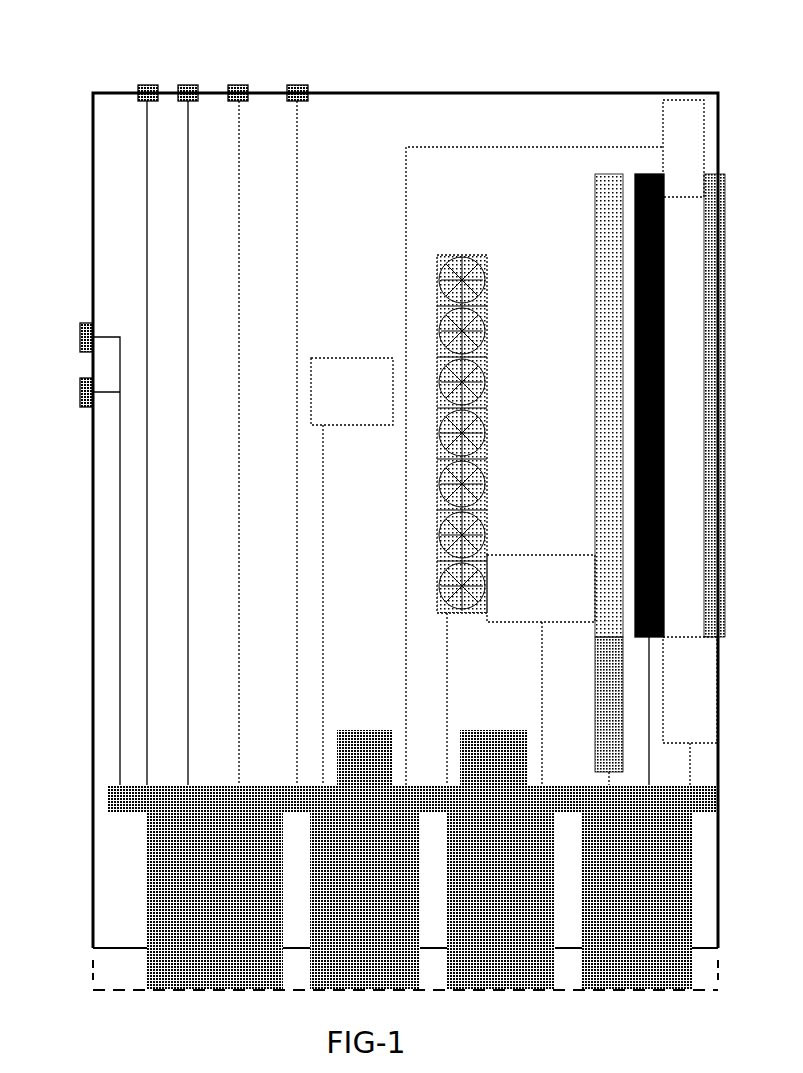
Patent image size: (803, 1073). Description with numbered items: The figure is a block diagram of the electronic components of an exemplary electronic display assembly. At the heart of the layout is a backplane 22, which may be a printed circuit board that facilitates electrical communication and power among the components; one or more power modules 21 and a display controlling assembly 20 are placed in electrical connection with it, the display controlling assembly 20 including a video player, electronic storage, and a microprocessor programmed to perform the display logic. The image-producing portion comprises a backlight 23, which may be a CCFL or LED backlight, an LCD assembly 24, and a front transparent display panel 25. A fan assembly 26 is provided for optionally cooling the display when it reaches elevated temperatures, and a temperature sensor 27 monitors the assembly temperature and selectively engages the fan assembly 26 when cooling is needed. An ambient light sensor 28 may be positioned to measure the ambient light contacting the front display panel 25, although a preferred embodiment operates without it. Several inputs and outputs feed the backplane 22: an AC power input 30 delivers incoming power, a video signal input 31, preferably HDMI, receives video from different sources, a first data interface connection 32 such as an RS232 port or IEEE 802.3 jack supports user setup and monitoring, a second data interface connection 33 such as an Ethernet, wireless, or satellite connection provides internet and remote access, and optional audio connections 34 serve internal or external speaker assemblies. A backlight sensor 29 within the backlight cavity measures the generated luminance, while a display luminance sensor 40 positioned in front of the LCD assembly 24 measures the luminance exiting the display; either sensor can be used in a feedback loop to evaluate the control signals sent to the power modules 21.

The display controlling assembly 20 is at (206, 960).
The power modules 21 is at (608, 966).
The backplane 22 is at (237, 798).
The backlight 23 is at (600, 172).
The LCD assembly 24 is at (647, 172).
The front transparent display panel 25 is at (723, 175).
The fan assembly 26 is at (443, 254).
The temperature sensor 27 is at (353, 356).
The ambient light sensor 28 is at (705, 692).
The backlight sensor 29 is at (558, 622).
The AC power input 30 is at (300, 84).
The video signal input 31 is at (139, 85).
The first data interface connection 32 is at (188, 84).
The second data interface connection 33 is at (243, 84).
The audio connections 34 is at (75, 333).
The display luminance sensor 40 is at (686, 112).